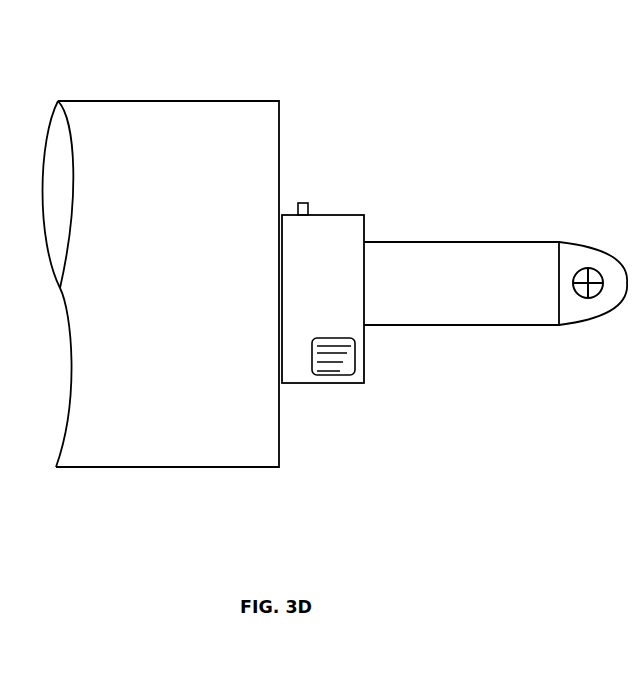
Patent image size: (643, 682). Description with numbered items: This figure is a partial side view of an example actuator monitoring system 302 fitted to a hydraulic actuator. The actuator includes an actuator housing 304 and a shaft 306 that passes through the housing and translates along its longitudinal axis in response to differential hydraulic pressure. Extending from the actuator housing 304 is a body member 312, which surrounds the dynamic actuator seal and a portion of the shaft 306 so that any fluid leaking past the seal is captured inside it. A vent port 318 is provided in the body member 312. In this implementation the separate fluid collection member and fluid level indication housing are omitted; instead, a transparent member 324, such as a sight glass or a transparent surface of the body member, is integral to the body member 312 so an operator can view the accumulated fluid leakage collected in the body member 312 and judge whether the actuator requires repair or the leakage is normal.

The actuator monitoring system 302 is at (329, 70).
The actuator housing 304 is at (161, 284).
The shaft 306 is at (495, 283).
The body member 312 is at (323, 299).
The vent port 318 is at (303, 201).
The transparent member 324 is at (342, 377).